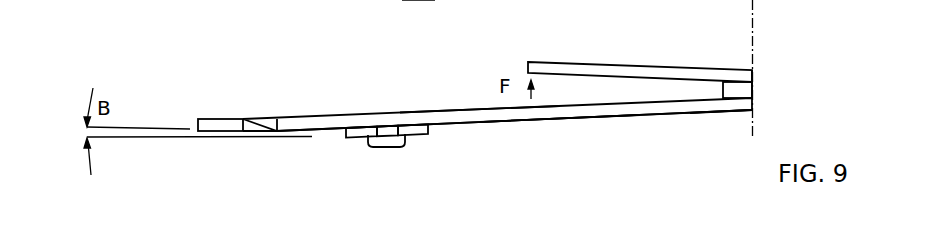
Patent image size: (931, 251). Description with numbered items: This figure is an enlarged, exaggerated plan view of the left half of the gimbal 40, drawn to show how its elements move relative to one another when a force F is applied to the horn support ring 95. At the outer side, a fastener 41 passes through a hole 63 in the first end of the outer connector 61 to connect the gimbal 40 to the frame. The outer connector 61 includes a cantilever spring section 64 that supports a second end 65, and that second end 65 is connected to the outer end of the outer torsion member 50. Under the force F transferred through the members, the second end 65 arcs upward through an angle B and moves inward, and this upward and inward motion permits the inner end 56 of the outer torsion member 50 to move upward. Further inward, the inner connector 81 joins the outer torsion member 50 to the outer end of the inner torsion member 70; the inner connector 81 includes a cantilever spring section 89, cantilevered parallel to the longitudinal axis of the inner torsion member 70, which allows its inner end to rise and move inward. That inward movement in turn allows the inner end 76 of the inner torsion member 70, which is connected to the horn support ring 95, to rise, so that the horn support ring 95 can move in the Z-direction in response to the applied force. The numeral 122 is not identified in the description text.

The gimbal 40 is at (664, 141).
The fastener 41 is at (397, 149).
The outer torsion member 50 is at (340, 116).
The inner end of outer torsion member 56 is at (460, 110).
The outer connector 61 is at (355, 138).
The hole 63 is at (386, 138).
The cantilever spring section 64 is at (278, 130).
The second end 65 is at (206, 119).
The inner torsion member 70 is at (740, 90).
The inner end of inner torsion member 76 is at (754, 80).
The inner connector 81 is at (563, 118).
The cantilever spring section 89 is at (717, 112).
The horn support ring 95 is at (532, 62).
The bend region 122 is at (421, 7).